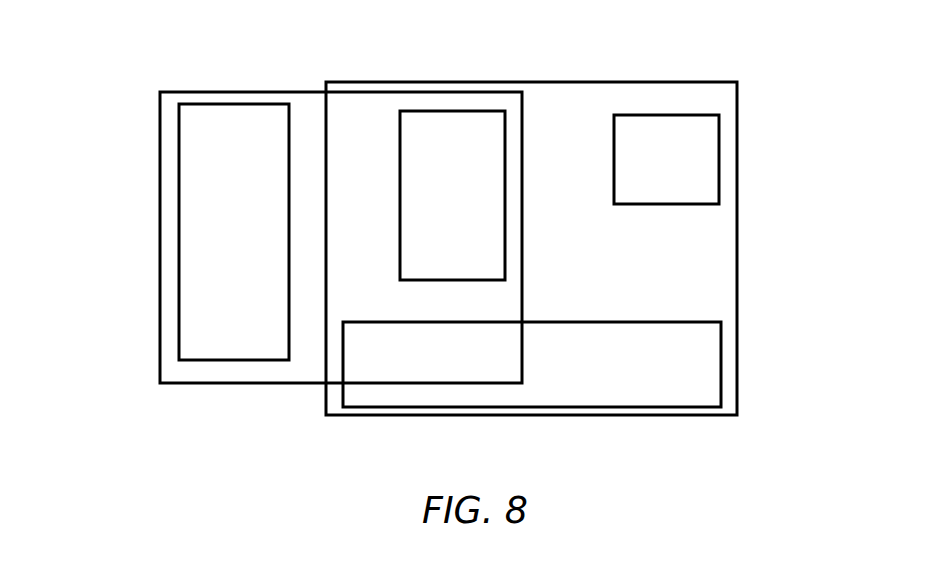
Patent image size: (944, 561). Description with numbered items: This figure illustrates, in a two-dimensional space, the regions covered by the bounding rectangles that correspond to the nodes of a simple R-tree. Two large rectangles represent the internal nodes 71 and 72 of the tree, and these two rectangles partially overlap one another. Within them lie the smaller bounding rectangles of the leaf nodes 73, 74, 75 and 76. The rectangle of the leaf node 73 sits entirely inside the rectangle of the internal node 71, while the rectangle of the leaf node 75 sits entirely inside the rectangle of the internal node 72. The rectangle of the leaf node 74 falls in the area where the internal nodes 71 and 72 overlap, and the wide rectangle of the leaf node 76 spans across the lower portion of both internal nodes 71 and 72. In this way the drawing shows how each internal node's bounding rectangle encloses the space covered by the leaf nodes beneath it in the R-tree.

The internal node 71 is at (160, 197).
The internal node 72 is at (737, 240).
The leaf node 73 is at (178, 327).
The leaf node 74 is at (505, 237).
The leaf node 75 is at (719, 160).
The leaf node 76 is at (721, 360).